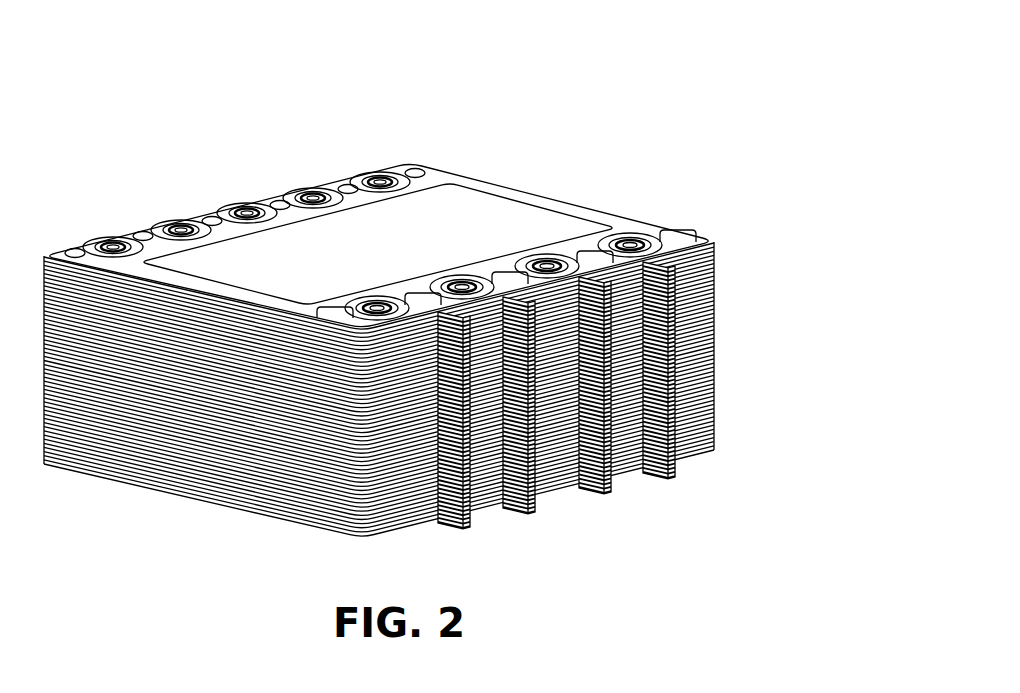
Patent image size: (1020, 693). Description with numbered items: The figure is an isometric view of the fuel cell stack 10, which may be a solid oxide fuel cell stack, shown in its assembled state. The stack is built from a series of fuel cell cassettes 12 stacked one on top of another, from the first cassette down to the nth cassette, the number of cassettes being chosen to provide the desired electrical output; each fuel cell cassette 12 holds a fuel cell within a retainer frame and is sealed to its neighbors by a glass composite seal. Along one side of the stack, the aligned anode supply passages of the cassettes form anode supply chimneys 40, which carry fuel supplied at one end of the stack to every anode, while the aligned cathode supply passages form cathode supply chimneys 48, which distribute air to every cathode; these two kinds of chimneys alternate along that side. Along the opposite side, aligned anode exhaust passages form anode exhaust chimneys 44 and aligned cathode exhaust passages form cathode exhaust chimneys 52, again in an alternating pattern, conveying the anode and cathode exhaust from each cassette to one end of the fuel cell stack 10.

The fuel cell stack 10 is at (752, 125).
The fuel cell cassette 12 is at (713, 242).
The anode supply chimney 40 is at (113, 247).
The anode exhaust chimney 44 is at (377, 308).
The cathode supply chimney 48 is at (75, 253).
The cathode exhaust chimney 52 is at (355, 320).